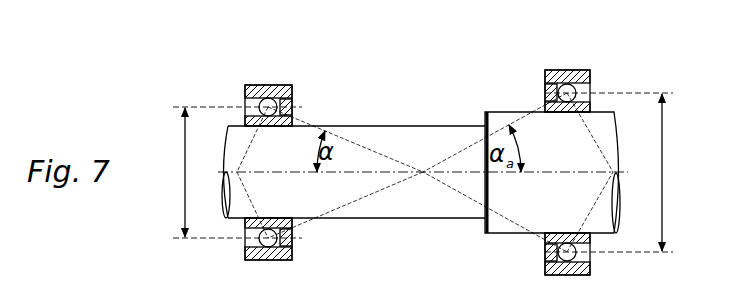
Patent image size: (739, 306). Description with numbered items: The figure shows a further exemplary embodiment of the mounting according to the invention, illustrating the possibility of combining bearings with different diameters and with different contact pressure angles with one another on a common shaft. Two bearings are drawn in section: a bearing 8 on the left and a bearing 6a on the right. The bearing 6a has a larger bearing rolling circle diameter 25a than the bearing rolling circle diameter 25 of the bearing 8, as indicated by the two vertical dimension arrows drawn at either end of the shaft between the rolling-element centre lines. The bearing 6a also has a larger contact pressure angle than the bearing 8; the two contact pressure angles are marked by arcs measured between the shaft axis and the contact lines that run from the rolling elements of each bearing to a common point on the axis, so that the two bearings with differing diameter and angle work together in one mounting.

The bearing 8 is at (254, 67).
The bearing 6a is at (579, 57).
The bearing rolling circle diameter 25 is at (185, 185).
The bearing rolling circle diameter 25a is at (662, 178).